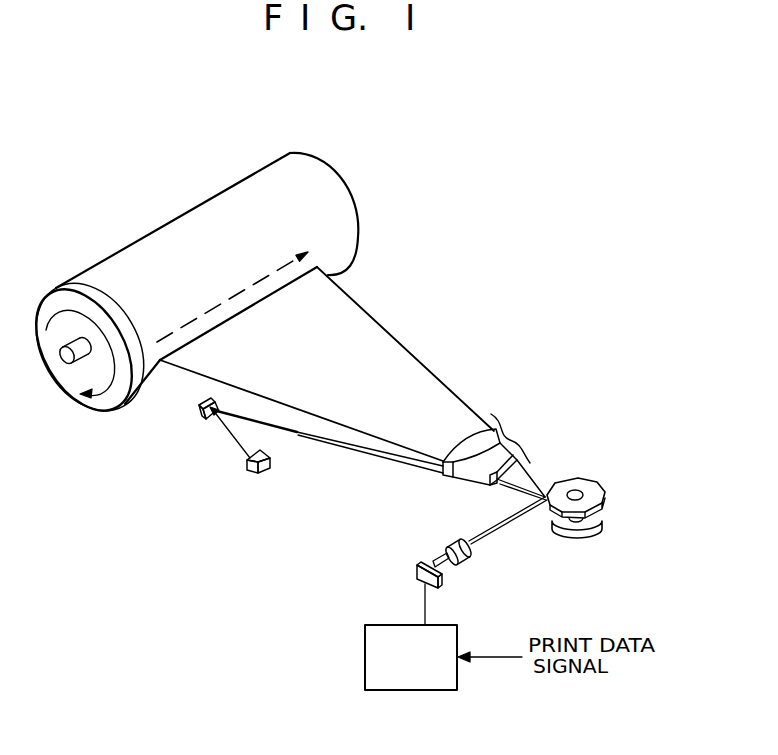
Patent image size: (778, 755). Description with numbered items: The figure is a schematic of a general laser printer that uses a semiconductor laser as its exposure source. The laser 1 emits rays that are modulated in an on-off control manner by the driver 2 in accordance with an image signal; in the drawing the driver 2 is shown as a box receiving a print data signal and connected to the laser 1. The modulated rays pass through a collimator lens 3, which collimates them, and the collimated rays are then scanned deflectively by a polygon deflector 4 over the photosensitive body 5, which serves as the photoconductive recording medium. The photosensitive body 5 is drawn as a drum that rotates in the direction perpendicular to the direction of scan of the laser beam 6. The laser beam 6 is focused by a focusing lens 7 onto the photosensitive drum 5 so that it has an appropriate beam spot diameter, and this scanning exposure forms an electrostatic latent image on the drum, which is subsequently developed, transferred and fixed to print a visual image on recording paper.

The laser 1 is at (415, 573).
The driver 2 is at (365, 653).
The collimator lens 3 is at (466, 561).
The polygon deflector 4 is at (550, 512).
The photosensitive body 5 is at (353, 215).
The laser beam 6 is at (368, 317).
The focusing lens 7 is at (520, 438).